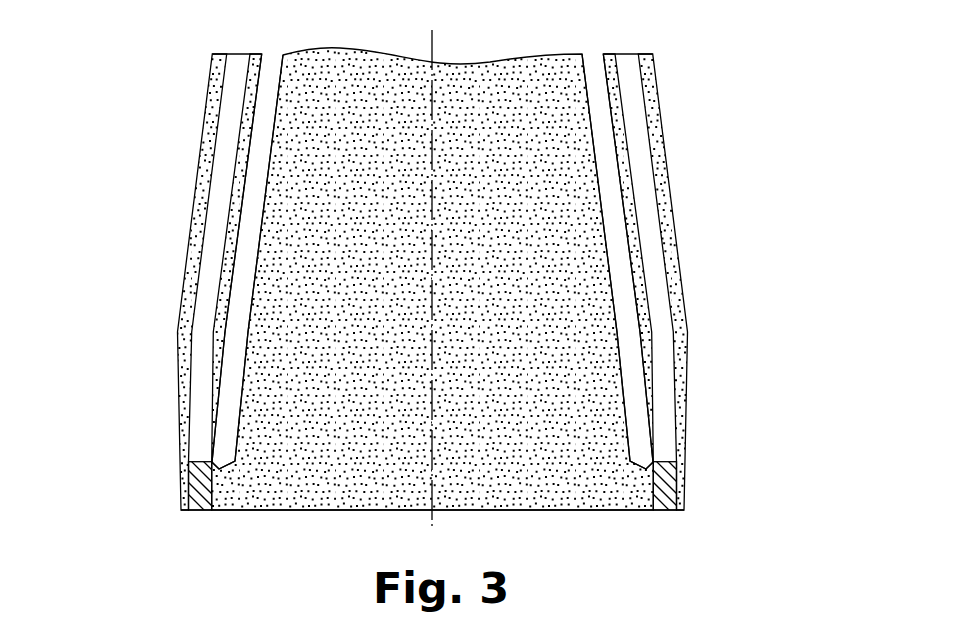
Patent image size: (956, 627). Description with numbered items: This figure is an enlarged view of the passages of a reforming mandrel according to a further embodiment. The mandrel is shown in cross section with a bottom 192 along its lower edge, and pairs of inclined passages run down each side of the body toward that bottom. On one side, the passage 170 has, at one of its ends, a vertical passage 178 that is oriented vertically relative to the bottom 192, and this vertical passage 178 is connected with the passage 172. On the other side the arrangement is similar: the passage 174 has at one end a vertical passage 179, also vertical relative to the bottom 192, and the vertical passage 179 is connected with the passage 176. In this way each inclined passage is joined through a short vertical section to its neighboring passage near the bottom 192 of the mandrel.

The passage 170 is at (643, 182).
The passage 172 is at (622, 273).
The passage 174 is at (220, 207).
The passage 176 is at (232, 317).
The vertical passage 178 is at (662, 425).
The vertical passage 179 is at (197, 416).
The bottom 192 is at (385, 511).